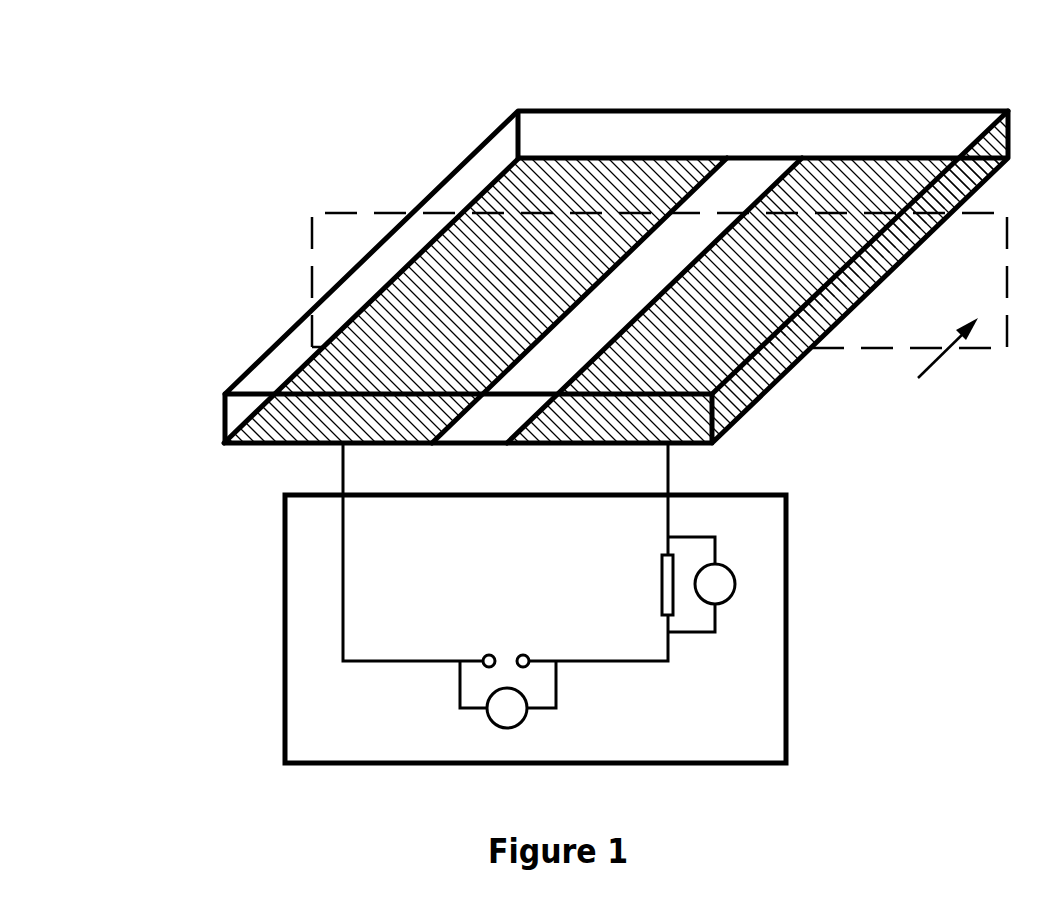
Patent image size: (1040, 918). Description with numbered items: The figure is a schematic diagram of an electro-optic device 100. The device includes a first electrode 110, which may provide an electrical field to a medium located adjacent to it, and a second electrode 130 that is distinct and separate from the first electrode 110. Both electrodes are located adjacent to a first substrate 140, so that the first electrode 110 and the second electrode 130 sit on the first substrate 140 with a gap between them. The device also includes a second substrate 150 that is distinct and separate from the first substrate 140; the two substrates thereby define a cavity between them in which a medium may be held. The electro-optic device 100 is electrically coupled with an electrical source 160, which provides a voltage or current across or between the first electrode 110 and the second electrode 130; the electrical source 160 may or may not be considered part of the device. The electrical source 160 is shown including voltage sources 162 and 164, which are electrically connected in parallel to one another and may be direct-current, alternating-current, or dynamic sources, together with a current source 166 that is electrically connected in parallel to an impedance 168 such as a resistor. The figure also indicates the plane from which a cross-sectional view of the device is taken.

The electro-optic device 100 is at (379, 112).
The first electrode 110 is at (310, 377).
The second electrode 130 is at (750, 397).
The first substrate 140 is at (488, 417).
The second substrate 150 is at (923, 123).
The electrical source 160 is at (715, 765).
The voltage source 162 is at (512, 726).
The voltage source 164 is at (521, 631).
The current source 166 is at (720, 603).
The impedance 168 is at (660, 585).